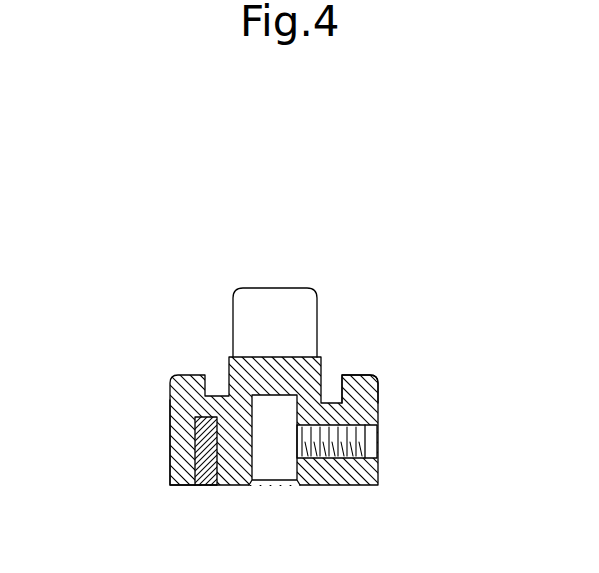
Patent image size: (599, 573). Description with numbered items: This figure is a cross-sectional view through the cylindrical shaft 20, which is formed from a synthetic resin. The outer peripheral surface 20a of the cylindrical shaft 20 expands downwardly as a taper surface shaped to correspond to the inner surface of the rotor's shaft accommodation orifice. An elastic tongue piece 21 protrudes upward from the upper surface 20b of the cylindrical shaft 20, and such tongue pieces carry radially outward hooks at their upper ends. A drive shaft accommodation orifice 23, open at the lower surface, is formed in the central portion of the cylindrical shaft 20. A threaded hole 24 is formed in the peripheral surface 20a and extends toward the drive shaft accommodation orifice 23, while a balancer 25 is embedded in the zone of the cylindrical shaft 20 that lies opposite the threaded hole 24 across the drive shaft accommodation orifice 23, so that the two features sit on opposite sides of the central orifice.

The cylindrical shaft 20 is at (187, 353).
The peripheral surface 20a is at (170, 423).
The upper surface 20b is at (362, 376).
The elastic tongue piece 21 is at (277, 303).
The drive shaft accommodation orifice 23 is at (273, 450).
The threaded hole 24 is at (340, 442).
The balancer 25 is at (207, 465).